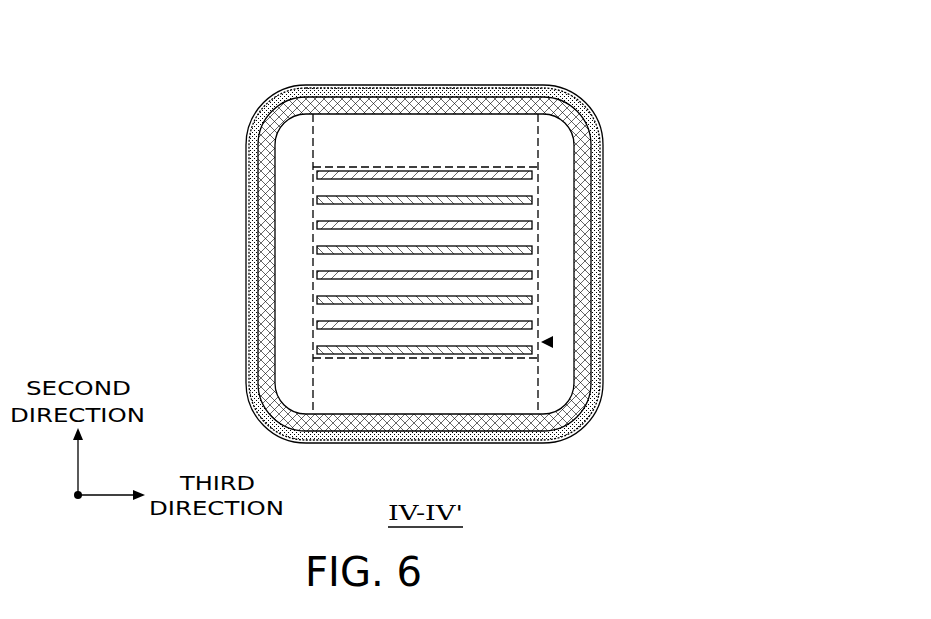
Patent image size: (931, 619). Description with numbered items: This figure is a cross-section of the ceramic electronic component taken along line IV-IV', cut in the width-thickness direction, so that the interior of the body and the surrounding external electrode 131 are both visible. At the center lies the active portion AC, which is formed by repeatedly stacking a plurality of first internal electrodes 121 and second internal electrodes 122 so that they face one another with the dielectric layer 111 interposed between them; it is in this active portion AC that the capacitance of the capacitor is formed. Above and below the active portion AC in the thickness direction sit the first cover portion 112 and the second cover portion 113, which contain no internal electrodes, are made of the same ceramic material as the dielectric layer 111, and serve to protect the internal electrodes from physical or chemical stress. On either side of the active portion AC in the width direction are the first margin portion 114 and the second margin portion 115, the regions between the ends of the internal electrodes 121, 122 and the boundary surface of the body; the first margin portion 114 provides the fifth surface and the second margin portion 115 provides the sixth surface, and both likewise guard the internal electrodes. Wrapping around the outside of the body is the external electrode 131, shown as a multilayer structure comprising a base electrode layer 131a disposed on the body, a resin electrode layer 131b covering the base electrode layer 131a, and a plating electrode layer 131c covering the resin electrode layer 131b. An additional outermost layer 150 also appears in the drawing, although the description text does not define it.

The dielectric layer 111 is at (352, 185).
The first cover portion 112 is at (390, 128).
The second cover portion 113 is at (390, 396).
The first margin portion 114 is at (290, 347).
The second margin portion 115 is at (560, 257).
The first internal electrode 121 is at (455, 175).
The second internal electrode 122 is at (498, 245).
The external electrode 131 is at (150, 222).
The base electrode layer 131a is at (250, 236).
The resin electrode layer 131b is at (257, 263).
The plating electrode layer 131c is at (262, 292).
The insulating layer 150 is at (605, 218).
The active portion AC is at (552, 344).